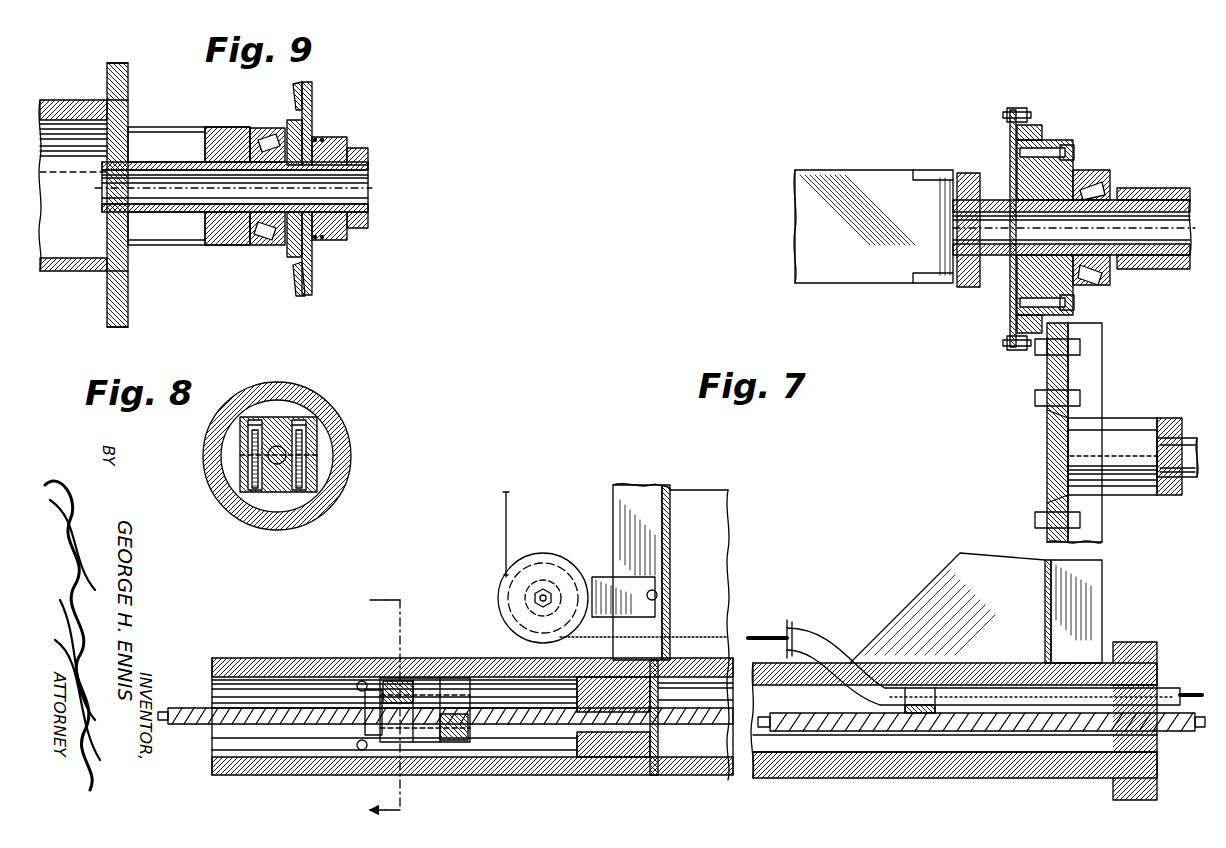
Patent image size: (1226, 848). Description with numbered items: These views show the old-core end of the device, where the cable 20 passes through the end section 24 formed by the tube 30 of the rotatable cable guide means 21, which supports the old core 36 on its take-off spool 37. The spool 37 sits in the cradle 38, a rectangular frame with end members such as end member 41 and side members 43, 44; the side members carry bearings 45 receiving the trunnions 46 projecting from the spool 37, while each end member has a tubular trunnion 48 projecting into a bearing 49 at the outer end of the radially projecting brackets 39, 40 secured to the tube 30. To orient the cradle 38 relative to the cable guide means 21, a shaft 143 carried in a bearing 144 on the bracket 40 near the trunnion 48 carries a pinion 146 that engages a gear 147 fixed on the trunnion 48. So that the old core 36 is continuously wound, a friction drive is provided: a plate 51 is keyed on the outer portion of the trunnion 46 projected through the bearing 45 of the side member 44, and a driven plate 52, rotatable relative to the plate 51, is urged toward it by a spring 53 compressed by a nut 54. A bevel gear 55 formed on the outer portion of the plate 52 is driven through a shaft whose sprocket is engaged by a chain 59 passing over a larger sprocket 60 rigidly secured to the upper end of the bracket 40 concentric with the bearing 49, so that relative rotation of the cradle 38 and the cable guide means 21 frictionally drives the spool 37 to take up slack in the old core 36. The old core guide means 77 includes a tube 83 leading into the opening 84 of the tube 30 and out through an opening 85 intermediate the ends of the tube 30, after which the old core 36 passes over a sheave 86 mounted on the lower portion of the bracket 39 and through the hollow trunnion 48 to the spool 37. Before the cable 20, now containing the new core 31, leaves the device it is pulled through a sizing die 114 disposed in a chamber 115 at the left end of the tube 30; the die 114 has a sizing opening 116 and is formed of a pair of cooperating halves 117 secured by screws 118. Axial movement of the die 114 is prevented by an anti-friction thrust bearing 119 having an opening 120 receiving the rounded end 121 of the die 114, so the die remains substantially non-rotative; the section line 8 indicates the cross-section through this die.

In FIG. 7, the section line 8- 8 is at (372, 705).
In FIG. 8, the cable 20 is at (276, 462).
In FIG. 7, the cable 20 is at (240, 708).
In FIG. 7, the cable guide means 21 is at (895, 563).
In FIG. 7, the end section 24 is at (890, 778).
In FIG. 7, the tube 30 is at (700, 776).
In FIG. 8, the new core 31 is at (266, 462).
In FIG. 7, the new core 31 is at (165, 710).
In FIG. 7, the old core 36 is at (505, 512).
In FIG. 9, the spool 37 is at (100, 272).
In FIG. 9, the cradle 38 is at (163, 250).
In FIG. 7, the cradle 38 is at (876, 285).
In FIG. 7, the bracket 39 is at (668, 515).
In FIG. 7, the bracket 40 is at (1090, 378).
In FIG. 9, the end member 41 is at (143, 148).
In FIG. 7, the end member 41 is at (960, 288).
In FIG. 7, the side member 43 is at (840, 255).
In FIG. 9, the side member 44 is at (224, 246).
In FIG. 9, the bearing 45 is at (270, 140).
In FIG. 9, the trunnion 46 is at (172, 165).
In FIG. 7, the tubular trunnion 48 is at (1005, 275).
In FIG. 7, the bearing 49 is at (1090, 176).
In FIG. 9, the plate 51 is at (278, 246).
In FIG. 9, the driven plate 52 is at (306, 128).
In FIG. 9, the spring 53 is at (320, 136).
In FIG. 9, the nut 54 is at (336, 242).
In FIG. 9, the bevel gear 55 is at (298, 285).
In FIG. 7, the chain 59 is at (1020, 112).
In FIG. 7, the sprocket 60 is at (1025, 175).
In FIG. 7, the old core guide means 77 is at (995, 688).
In FIG. 7, the tube 83 is at (832, 645).
In FIG. 7, the opening 84 is at (1032, 745).
In FIG. 7, the opening 85 is at (878, 685).
In FIG. 7, the sheave 86 is at (550, 556).
In FIG. 8, the sizing die 114 is at (318, 447).
In FIG. 7, the sizing die 114 is at (425, 680).
In FIG. 7, the chamber 115 is at (520, 690).
In FIG. 8, the sizing opening 116 is at (279, 462).
In FIG. 8, the die halves 117 is at (280, 425).
In FIG. 7, the die halves 117 is at (436, 682).
In FIG. 8, the screws 118 is at (255, 436).
In FIG. 8, the thrust bearing 119 is at (258, 402).
In FIG. 7, the thrust bearing 119 is at (363, 680).
In FIG. 7, the opening 120 is at (364, 752).
In FIG. 7, the rounded end 121 is at (375, 690).
In FIG. 7, the shaft 143 is at (1172, 445).
In FIG. 7, the bearing 144 is at (1115, 492).
In FIG. 7, the pinion 146 is at (1172, 495).
In FIG. 7, the gear 147 is at (1150, 188).